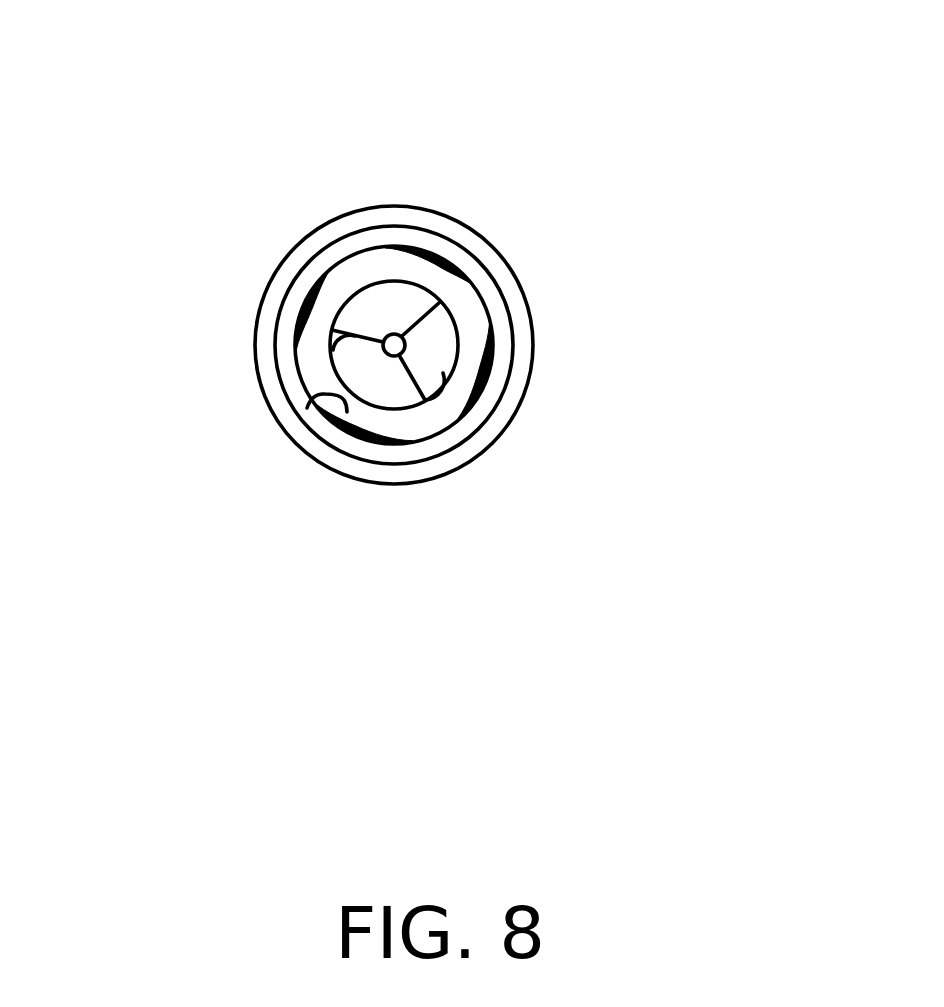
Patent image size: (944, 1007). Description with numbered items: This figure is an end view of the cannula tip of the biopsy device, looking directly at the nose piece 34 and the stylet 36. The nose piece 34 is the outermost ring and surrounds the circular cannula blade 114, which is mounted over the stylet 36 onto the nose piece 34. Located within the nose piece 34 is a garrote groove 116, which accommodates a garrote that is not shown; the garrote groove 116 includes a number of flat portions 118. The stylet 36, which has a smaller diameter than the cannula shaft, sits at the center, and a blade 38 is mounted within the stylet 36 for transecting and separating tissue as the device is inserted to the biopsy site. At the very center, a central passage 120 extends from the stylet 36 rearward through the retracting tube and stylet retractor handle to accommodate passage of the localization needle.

The nose piece 34 is at (443, 210).
The stylet 36 is at (380, 302).
The blade 38 is at (425, 317).
The cannula blade 114 is at (513, 333).
The garrote groove 116 is at (434, 438).
The flat portions 118 is at (307, 408).
The central passage 120 is at (383, 348).